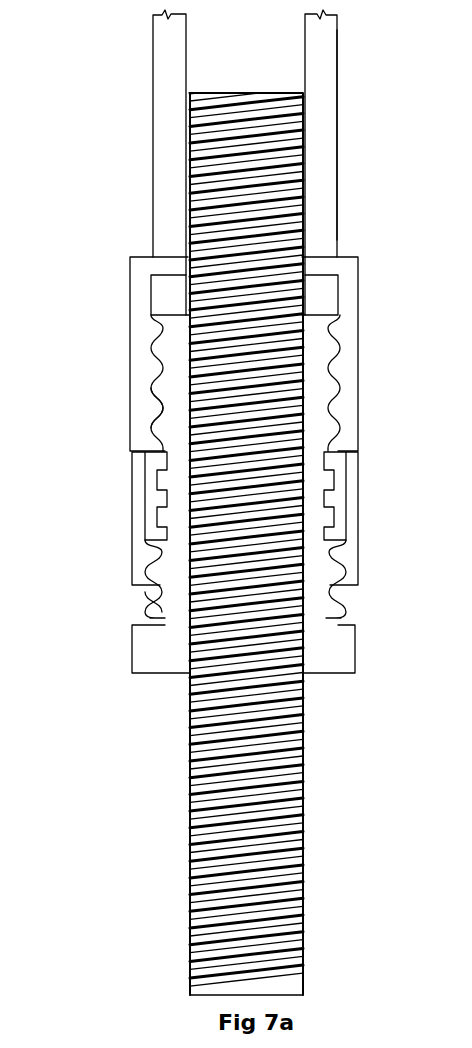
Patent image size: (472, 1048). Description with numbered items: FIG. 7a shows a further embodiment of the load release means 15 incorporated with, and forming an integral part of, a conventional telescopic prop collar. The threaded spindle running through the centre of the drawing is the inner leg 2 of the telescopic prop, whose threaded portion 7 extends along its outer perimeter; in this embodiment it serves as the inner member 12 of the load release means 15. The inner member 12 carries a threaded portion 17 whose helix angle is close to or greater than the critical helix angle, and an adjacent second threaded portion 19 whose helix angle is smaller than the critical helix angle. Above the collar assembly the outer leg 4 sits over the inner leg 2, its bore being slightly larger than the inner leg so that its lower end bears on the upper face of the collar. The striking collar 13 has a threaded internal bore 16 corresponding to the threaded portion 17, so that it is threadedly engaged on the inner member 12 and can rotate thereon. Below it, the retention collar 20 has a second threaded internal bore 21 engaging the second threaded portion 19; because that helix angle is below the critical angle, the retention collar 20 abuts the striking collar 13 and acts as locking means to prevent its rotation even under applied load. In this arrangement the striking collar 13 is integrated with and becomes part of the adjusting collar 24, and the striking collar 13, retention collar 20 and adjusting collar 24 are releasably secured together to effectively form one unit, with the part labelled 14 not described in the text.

The inner leg 2 is at (312, 756).
The outer leg 4 is at (344, 227).
The threaded portion of the inner leg 7 is at (218, 752).
The inner member 12 is at (235, 210).
The striking collar 13 is at (364, 384).
The guide tube 14 is at (167, 118).
The load release means 15 is at (142, 301).
The threaded internal bore 16 is at (149, 426).
The threaded portion 17 is at (151, 374).
The second threaded portion 19 is at (152, 541).
The retention collar 20 is at (366, 560).
The second threaded internal bore 21 is at (151, 587).
The adjusting collar 24 is at (364, 649).